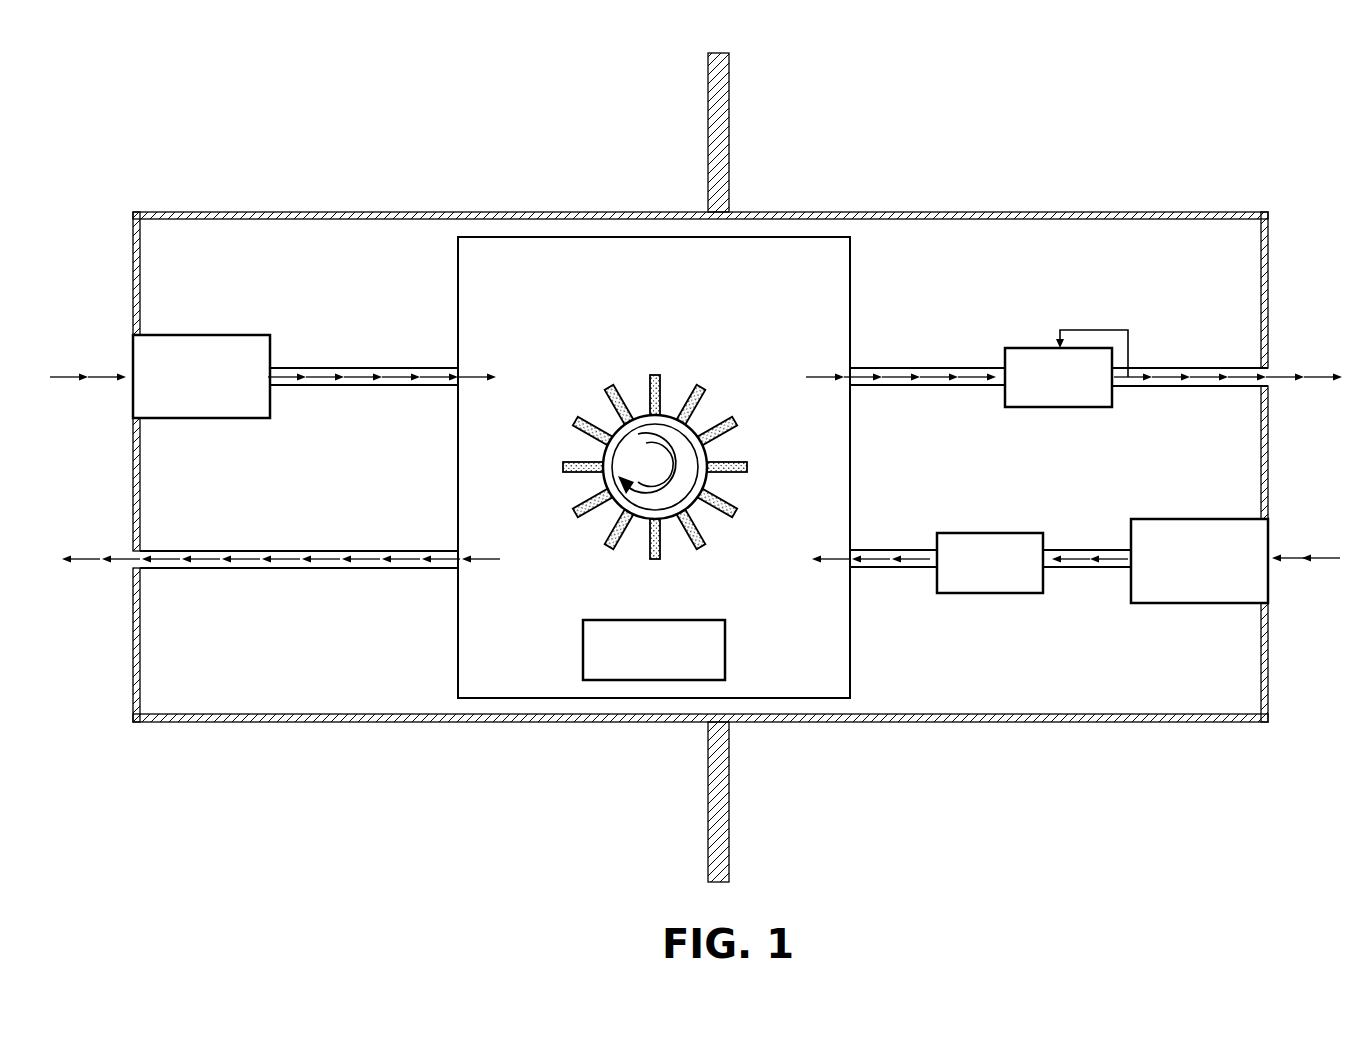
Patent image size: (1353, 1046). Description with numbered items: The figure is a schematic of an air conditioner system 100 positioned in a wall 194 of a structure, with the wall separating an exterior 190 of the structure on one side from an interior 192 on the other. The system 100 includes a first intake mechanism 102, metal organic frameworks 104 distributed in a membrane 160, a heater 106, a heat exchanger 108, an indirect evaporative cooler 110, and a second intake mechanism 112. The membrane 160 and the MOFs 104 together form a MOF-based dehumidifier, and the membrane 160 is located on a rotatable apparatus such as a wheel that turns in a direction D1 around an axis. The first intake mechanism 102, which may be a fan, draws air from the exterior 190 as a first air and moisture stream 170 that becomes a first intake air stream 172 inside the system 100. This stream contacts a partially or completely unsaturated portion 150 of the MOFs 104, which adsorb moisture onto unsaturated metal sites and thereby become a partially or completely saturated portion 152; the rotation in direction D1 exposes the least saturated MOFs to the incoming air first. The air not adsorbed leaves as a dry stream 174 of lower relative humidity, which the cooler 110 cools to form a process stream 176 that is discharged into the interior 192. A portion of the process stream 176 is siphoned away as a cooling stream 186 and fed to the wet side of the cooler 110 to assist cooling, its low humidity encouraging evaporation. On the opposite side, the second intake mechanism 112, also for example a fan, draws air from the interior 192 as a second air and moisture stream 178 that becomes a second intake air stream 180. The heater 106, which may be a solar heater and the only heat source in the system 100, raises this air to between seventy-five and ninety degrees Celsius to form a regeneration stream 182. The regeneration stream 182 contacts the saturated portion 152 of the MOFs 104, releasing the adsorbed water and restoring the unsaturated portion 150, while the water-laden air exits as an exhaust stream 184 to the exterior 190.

The air conditioner system 100 is at (165, 212).
The first intake mechanism 102 is at (236, 335).
The metal organic frameworks 104 is at (662, 388).
The heater 106 is at (962, 593).
The heat exchanger 108 is at (583, 667).
The indirect evaporative cooler 110 is at (1034, 348).
The second intake mechanism 112 is at (1161, 519).
The partially or completely unsaturated portion 150 is at (655, 466).
The partially or completely saturated portion 152 is at (721, 565).
The membrane 160 is at (650, 388).
The direction of rotation D1 is at (702, 478).
The first air and moisture stream 170 is at (70, 377).
The first intake air stream 172 is at (390, 377).
The dry stream 174 is at (904, 377).
The process stream 176 is at (1168, 377).
The second air and moisture stream 178 is at (1324, 558).
The second intake air stream 180 is at (1068, 559).
The regeneration stream 182 is at (876, 559).
The exhaust stream 184 is at (245, 559).
The cooling stream 186 is at (1098, 330).
The exterior of the structure 190 is at (471, 122).
The interior of the structure 192 is at (1039, 122).
The wall 194 is at (708, 84).